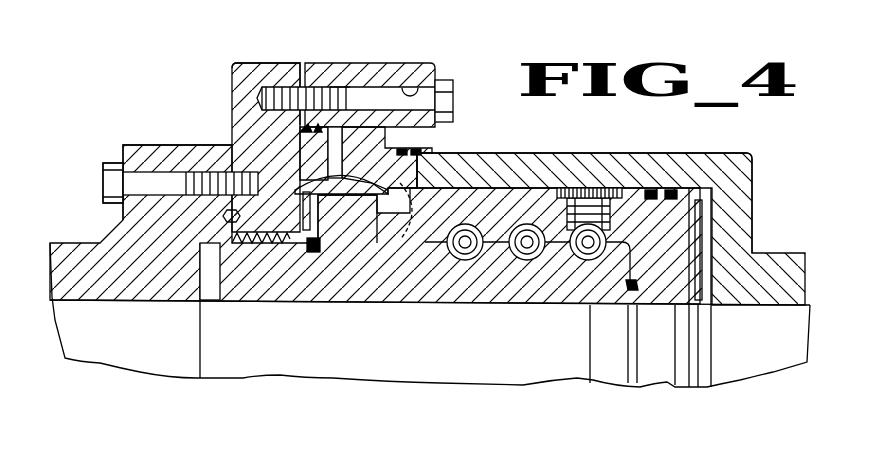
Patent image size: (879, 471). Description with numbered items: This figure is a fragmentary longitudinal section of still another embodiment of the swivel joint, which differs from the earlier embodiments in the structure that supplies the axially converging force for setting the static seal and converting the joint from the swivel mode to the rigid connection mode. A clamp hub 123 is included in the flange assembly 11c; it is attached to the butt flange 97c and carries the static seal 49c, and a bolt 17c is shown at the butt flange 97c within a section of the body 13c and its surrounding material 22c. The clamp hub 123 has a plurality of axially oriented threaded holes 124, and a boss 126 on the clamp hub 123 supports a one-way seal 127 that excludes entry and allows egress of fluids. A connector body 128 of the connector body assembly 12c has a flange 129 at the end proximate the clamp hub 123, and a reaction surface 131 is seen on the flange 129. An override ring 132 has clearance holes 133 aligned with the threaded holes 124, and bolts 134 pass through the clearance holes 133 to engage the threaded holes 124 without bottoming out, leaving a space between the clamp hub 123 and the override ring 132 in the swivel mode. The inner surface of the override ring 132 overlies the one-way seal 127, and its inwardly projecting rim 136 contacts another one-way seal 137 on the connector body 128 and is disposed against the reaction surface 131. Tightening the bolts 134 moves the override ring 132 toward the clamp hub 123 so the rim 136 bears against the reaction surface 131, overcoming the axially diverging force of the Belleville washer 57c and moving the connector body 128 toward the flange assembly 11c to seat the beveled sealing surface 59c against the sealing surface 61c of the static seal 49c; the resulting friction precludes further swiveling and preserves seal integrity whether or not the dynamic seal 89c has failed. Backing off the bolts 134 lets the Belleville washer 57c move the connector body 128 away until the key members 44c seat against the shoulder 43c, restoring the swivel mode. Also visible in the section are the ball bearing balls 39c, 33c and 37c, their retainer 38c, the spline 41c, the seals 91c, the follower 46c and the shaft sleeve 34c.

The flange assembly 11c is at (118, 147).
The bolt 17c is at (110, 180).
The butt flange 97c is at (147, 147).
The clamp hub 123 is at (238, 78).
The threaded holes 124 is at (271, 88).
The boss 126 is at (232, 140).
The one-way seal 127 is at (300, 129).
The flange 129 is at (359, 128).
The override ring 132 is at (367, 68).
The clearance holes 133 is at (415, 86).
The bolts 134 is at (336, 87).
The inwardly projecting rim 136 is at (447, 104).
The reaction surface 131 is at (428, 135).
The one-way seal 137 is at (420, 152).
The static seal 49c is at (342, 150).
The sealing surface 61c is at (345, 173).
The follower 46c is at (422, 165).
The beveled sealing surface 59c is at (347, 219).
The shoulder 43c is at (423, 222).
The ball 37c is at (518, 226).
The spline 41c is at (587, 188).
The seals 91c is at (672, 186).
The connector body 128 is at (703, 158).
The connector body assembly 12c is at (765, 181).
The ball retainer 38c is at (610, 216).
The key members 44c is at (322, 246).
The body 22c is at (420, 294).
The ball 39c is at (470, 261).
The ball 33c is at (548, 261).
The dynamic seal 89c is at (634, 280).
The Belleville washer 57c is at (710, 277).
The shaft 34c is at (672, 303).
The base 13c is at (147, 334).